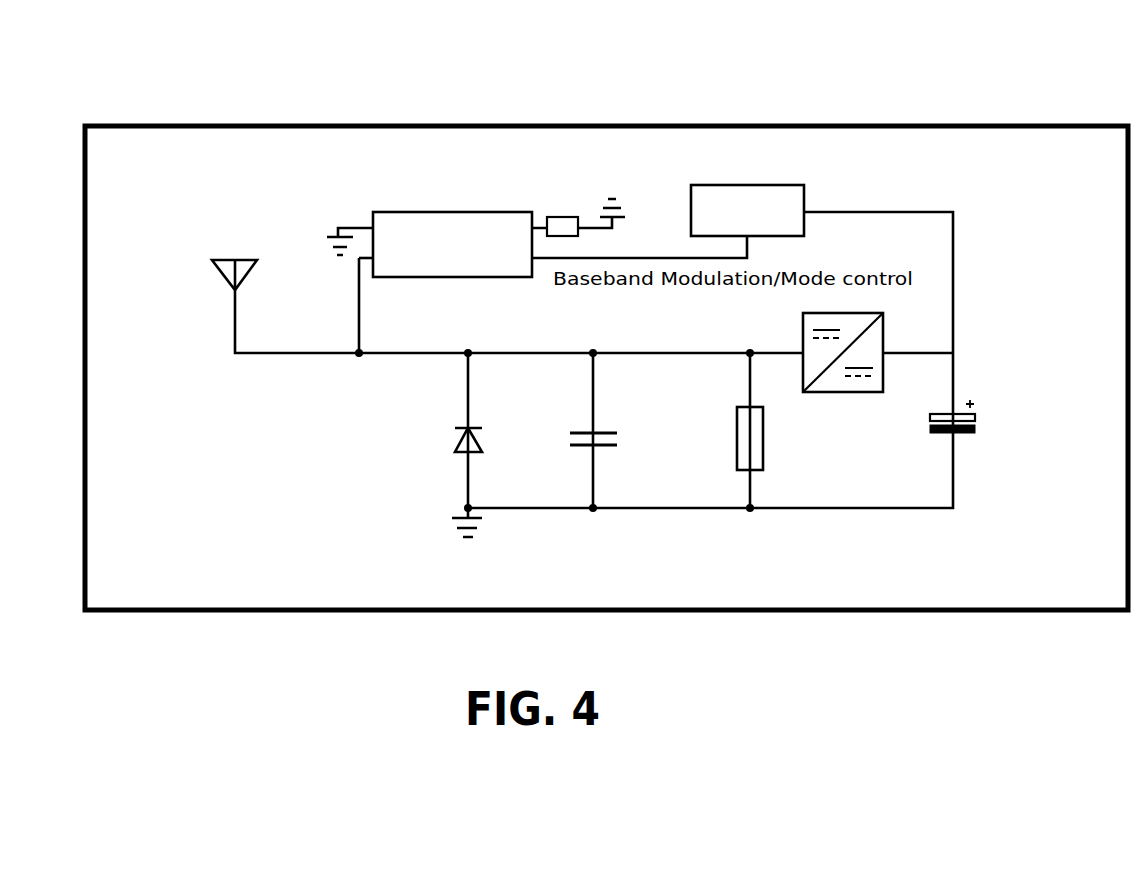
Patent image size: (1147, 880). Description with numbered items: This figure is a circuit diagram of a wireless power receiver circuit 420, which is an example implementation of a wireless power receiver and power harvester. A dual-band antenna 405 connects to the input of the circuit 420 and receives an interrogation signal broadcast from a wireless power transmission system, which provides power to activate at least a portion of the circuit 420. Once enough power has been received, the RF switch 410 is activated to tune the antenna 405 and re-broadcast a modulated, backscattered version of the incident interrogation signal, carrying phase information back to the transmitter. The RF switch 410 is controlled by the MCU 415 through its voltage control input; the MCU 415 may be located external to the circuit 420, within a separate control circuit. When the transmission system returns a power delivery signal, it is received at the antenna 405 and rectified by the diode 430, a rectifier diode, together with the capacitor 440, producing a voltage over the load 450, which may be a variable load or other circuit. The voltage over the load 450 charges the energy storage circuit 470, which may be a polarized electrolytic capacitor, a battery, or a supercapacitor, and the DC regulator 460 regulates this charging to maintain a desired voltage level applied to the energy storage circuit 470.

The antenna 405 is at (238, 260).
The RF switch 410 is at (382, 212).
The MCU 415 is at (698, 200).
The wireless power receiver circuit 420 is at (175, 125).
The diode 430 is at (466, 426).
The capacitor 440 is at (583, 430).
The load 450 is at (737, 437).
The DC regulator 460 is at (803, 335).
The energy storage circuit 470 is at (978, 412).